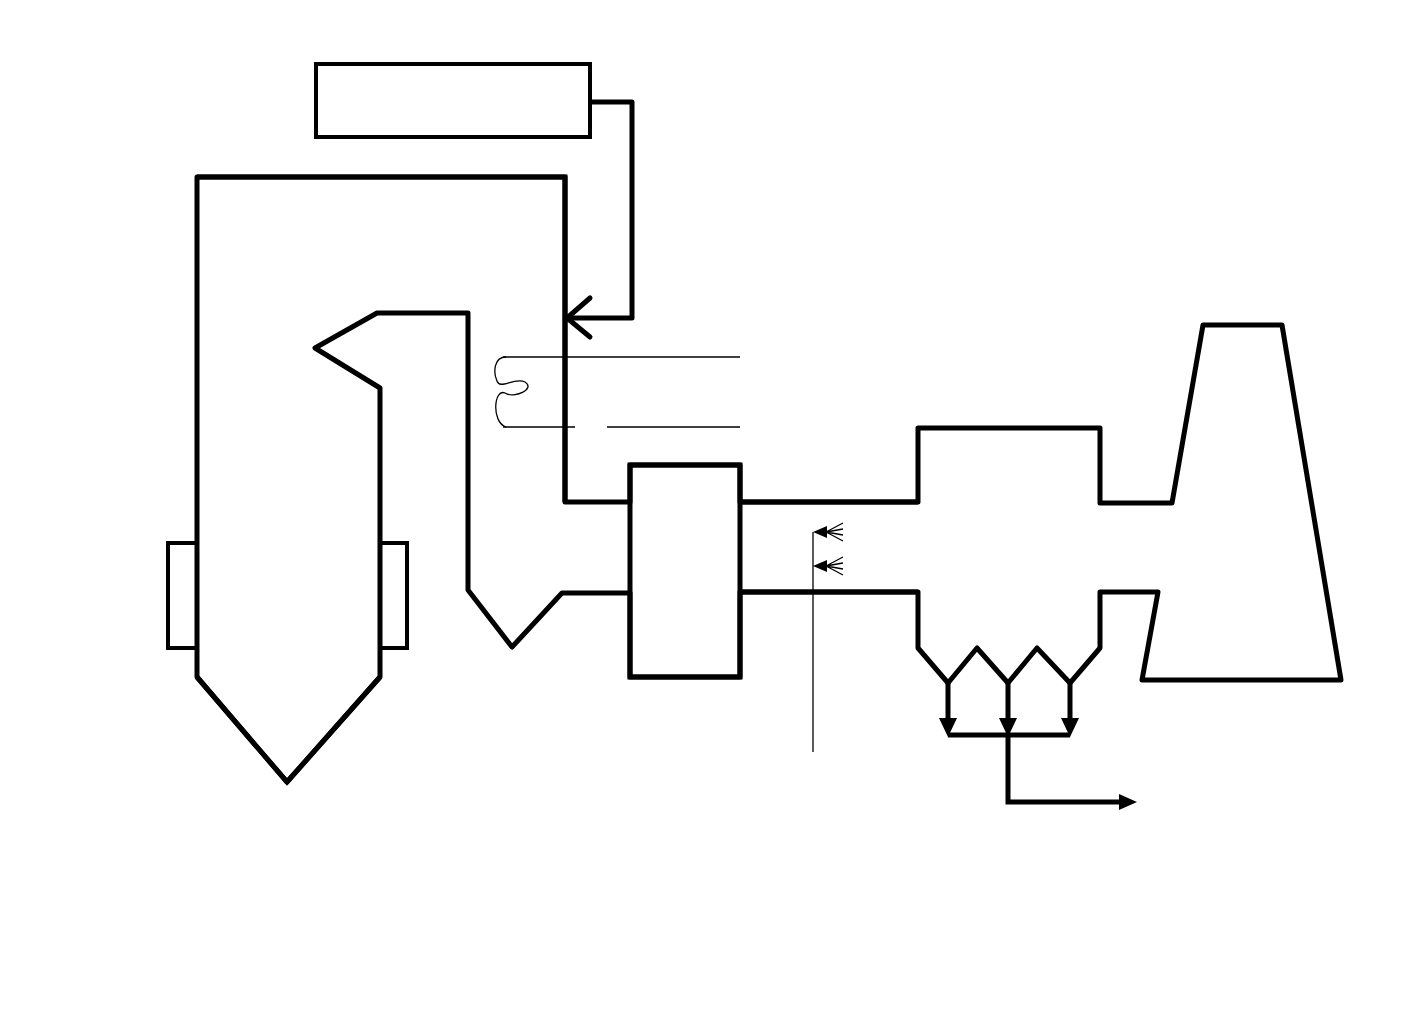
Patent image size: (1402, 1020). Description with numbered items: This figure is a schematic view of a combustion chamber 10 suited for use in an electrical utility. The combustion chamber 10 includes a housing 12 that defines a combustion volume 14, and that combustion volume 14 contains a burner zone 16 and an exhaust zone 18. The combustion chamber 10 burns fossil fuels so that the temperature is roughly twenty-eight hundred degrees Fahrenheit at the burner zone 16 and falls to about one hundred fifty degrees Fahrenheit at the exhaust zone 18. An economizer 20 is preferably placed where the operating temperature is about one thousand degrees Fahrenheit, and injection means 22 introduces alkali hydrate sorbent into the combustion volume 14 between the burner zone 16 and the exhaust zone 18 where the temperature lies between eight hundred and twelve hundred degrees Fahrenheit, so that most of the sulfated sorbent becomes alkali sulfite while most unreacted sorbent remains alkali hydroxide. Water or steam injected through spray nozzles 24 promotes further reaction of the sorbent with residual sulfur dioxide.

The combustion chamber 10 is at (166, 336).
The housing 12 is at (193, 446).
The combustion volume 14 is at (247, 222).
The burner zone 16 is at (293, 642).
The exhaust zone 18 is at (881, 551).
The economizer 20 is at (670, 358).
The injection means 22 is at (632, 215).
The spray nozzles 24 is at (813, 592).